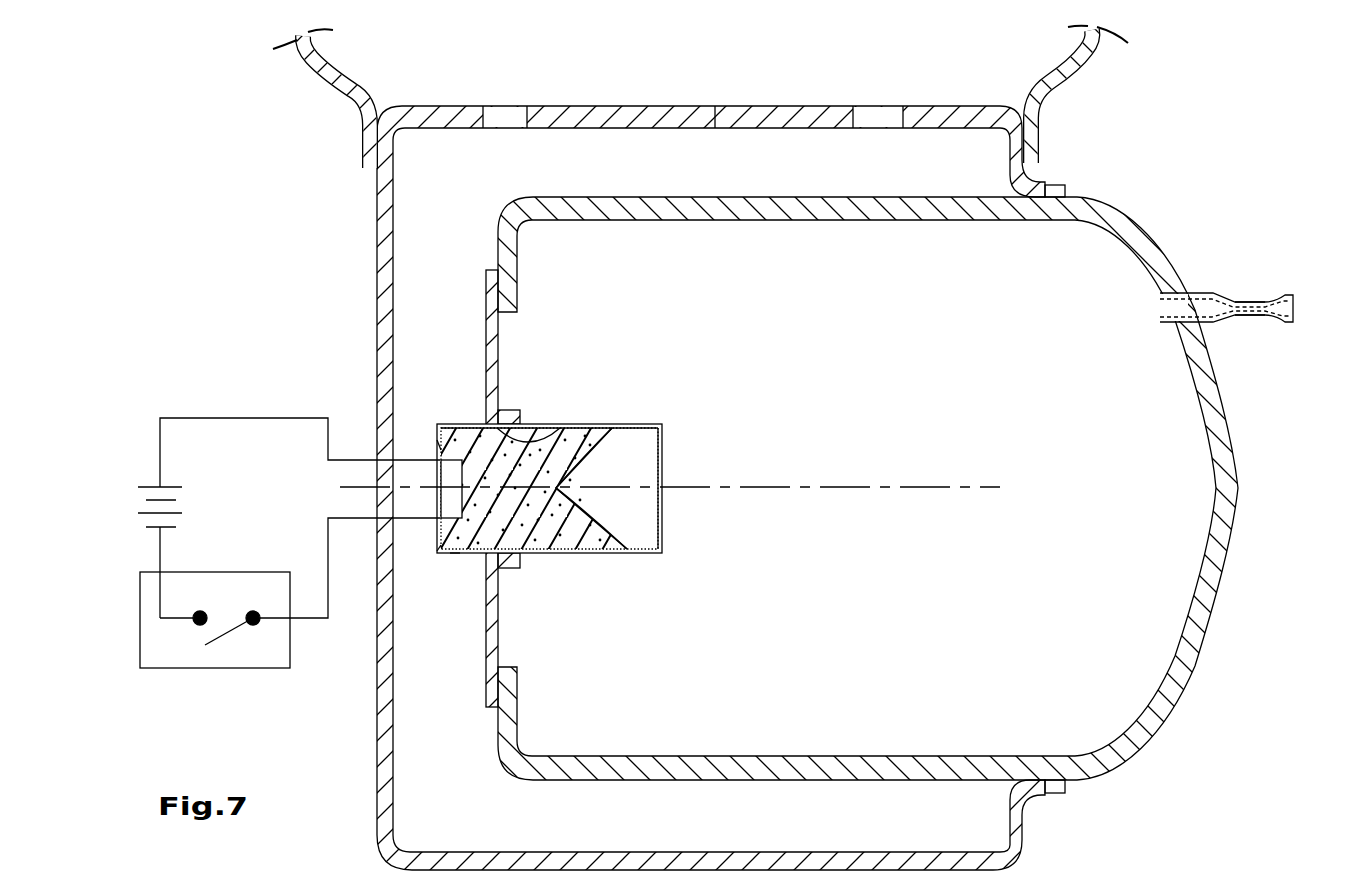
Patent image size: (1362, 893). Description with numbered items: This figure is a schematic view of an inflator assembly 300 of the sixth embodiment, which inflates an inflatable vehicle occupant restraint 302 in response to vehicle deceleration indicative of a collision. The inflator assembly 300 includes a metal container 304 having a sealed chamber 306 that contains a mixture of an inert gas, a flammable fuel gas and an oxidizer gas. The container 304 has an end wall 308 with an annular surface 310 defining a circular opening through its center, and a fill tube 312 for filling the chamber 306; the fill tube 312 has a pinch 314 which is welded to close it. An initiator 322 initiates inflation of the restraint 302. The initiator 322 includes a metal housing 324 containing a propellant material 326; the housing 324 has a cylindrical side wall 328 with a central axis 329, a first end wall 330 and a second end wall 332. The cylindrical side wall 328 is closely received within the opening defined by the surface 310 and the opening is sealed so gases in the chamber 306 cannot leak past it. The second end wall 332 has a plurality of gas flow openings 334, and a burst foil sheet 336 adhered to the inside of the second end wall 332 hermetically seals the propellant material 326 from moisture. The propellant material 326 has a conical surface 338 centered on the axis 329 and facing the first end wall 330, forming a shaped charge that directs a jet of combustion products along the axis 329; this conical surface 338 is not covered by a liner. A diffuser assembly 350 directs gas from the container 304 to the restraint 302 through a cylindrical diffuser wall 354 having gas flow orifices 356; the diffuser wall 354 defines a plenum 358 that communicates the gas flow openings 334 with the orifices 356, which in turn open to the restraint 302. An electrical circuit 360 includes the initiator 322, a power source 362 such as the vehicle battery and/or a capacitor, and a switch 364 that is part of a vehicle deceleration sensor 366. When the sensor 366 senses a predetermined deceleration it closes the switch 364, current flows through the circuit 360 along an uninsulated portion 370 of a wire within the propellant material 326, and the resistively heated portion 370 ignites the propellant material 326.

The inflator assembly 300 is at (243, 226).
The inflatable vehicle occupant restraint 302 is at (327, 83).
The metal container 304 is at (1123, 193).
The sealed chamber 306 is at (1033, 317).
The end wall 308 is at (500, 333).
The annular surface 310 is at (553, 423).
The fill tube 312 is at (1200, 297).
The pinch 314 is at (1248, 300).
The initiator 322 is at (531, 463).
The metal housing 324 is at (465, 417).
The propellant material 326 is at (593, 427).
The cylindrical side wall 328 is at (607, 423).
The central axis 329 is at (875, 487).
The first end wall 330 is at (662, 467).
The second end wall 332 is at (440, 465).
The gas flow openings 334 is at (437, 447).
The burst foil sheet 336 is at (455, 556).
The conical surface 338 is at (587, 453).
The diffuser assembly 350 is at (376, 287).
The cylindrical diffuser wall 354 is at (445, 132).
The gas flow orifices 356 is at (513, 112).
The plenum 358 is at (466, 229).
The electrical circuit 360 is at (259, 544).
The power source 362 is at (159, 485).
The switch 364 is at (237, 632).
The vehicle deceleration sensor 366 is at (138, 628).
The uninsulated portion of a wire 370 is at (560, 517).